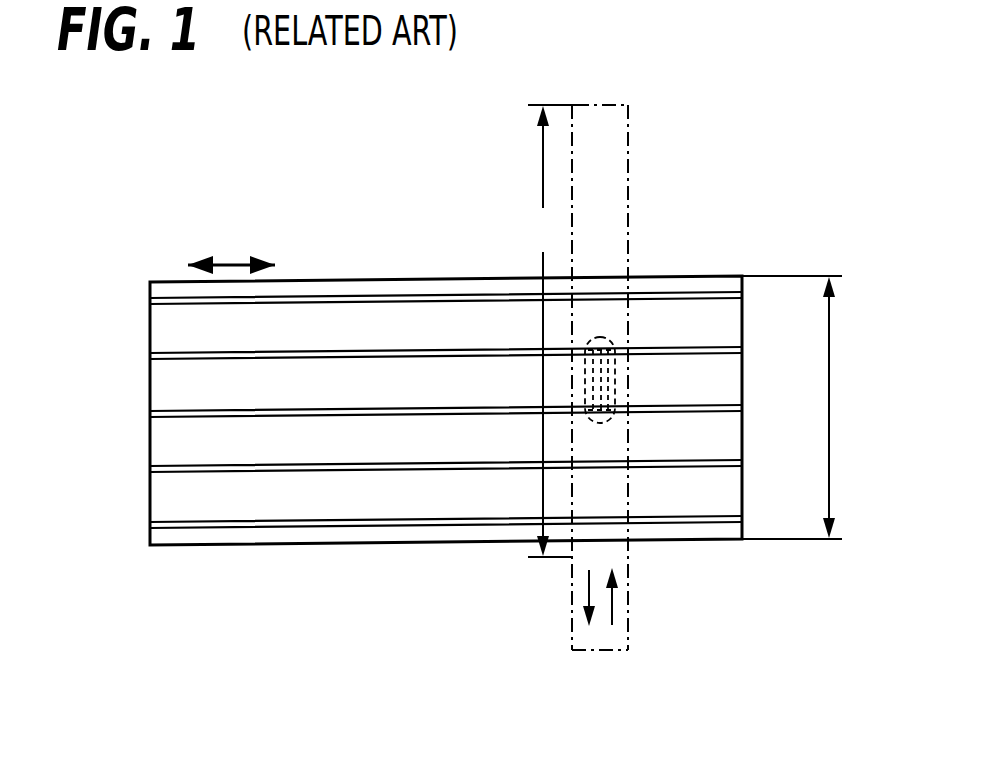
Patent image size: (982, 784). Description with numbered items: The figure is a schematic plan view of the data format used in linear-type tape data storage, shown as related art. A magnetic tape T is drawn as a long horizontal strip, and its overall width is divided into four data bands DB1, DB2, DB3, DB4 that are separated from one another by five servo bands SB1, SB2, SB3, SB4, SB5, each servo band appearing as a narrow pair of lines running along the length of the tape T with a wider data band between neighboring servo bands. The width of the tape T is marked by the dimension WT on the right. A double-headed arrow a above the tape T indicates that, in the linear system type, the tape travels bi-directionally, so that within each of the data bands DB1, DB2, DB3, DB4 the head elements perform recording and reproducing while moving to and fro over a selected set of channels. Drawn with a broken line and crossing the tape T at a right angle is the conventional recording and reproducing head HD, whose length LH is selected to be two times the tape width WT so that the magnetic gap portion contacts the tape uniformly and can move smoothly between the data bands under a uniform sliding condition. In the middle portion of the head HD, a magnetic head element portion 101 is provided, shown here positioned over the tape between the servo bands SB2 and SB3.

The magnetic head element portion 101 is at (583, 387).
The recording and reproducing head HD is at (740, 150).
The magnetic tape T is at (427, 279).
The arrow a is at (222, 266).
The length of the magnetic head LH is at (551, 331).
The tape width WT is at (793, 407).
The data band DB1 is at (166, 325).
The data band DB2 is at (166, 383).
The data band DB3 is at (166, 445).
The data band DB4 is at (166, 497).
The servo band SB1 is at (716, 297).
The servo band SB2 is at (732, 350).
The servo band SB3 is at (732, 406).
The servo band SB4 is at (732, 461).
The servo band SB5 is at (732, 517).